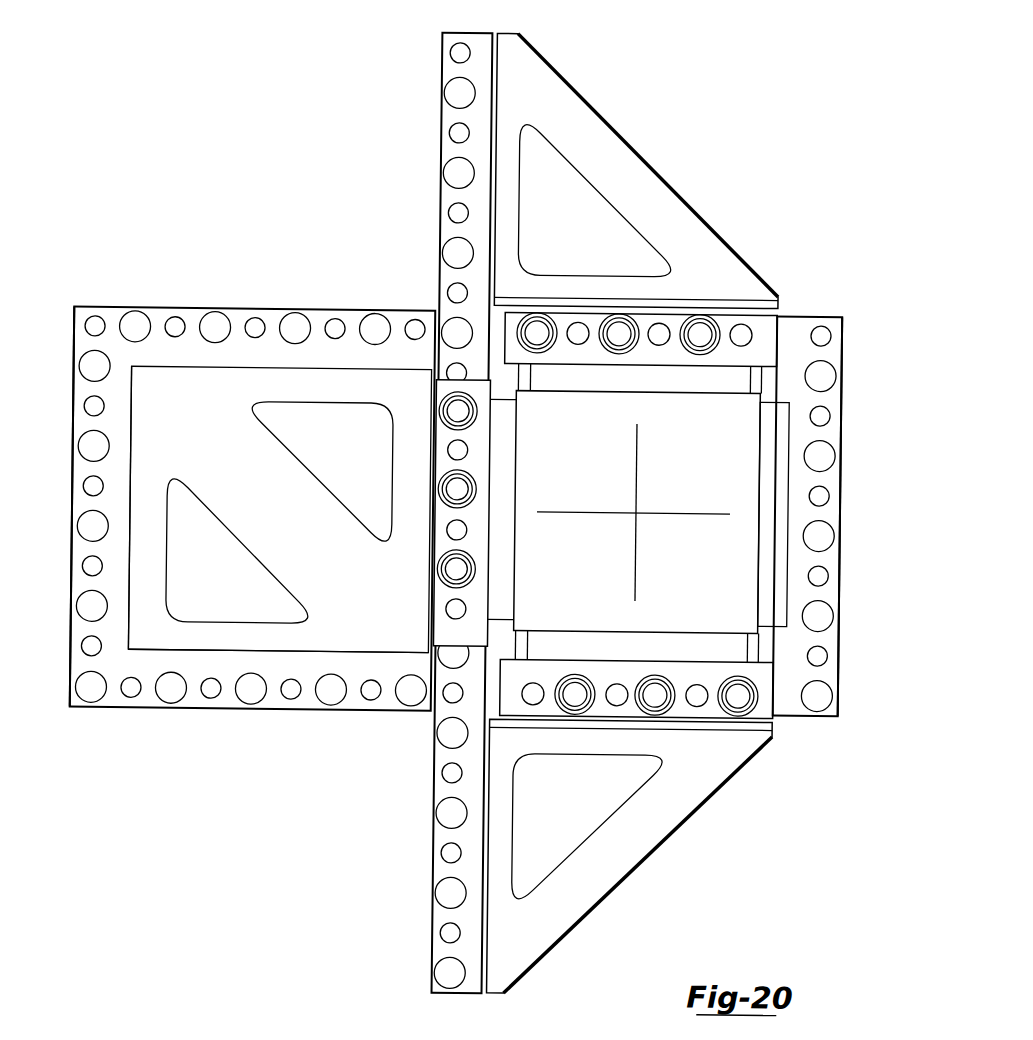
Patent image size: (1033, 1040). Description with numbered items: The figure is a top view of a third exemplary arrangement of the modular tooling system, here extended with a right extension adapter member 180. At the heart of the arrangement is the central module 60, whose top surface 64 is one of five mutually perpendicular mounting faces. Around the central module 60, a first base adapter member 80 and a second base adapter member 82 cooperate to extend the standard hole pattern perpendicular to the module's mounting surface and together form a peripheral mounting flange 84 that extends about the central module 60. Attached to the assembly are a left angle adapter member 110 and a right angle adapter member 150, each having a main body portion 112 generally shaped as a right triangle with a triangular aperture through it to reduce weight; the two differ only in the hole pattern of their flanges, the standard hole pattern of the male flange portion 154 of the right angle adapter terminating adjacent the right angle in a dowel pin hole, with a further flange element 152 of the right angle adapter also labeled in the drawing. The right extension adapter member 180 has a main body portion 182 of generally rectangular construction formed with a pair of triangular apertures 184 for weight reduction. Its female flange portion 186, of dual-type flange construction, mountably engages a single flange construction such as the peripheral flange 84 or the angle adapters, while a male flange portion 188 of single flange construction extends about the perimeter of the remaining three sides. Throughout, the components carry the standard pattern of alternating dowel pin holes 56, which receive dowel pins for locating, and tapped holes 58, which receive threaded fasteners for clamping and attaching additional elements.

The dowel pin holes 56 is at (446, 56).
The tapped holes 58 is at (438, 103).
The central module 60 is at (741, 610).
The top surface 64 is at (737, 486).
The first base adapter member 80 is at (826, 624).
The second base adapter member 82 is at (721, 648).
The peripheral mounting flange 84 is at (805, 313).
The left angle adapter member 110 is at (641, 840).
The main body portion 112 is at (600, 120).
The right angle adapter member 150 is at (623, 163).
The clamp block fastener 152 is at (658, 355).
The male flange portion 154 is at (441, 143).
The right extension adapter member 180 is at (113, 316).
The main body portion 182 is at (340, 637).
The triangular apertures 184 is at (328, 473).
The female flange portion 186 is at (477, 460).
The male flange portion 188 is at (78, 501).